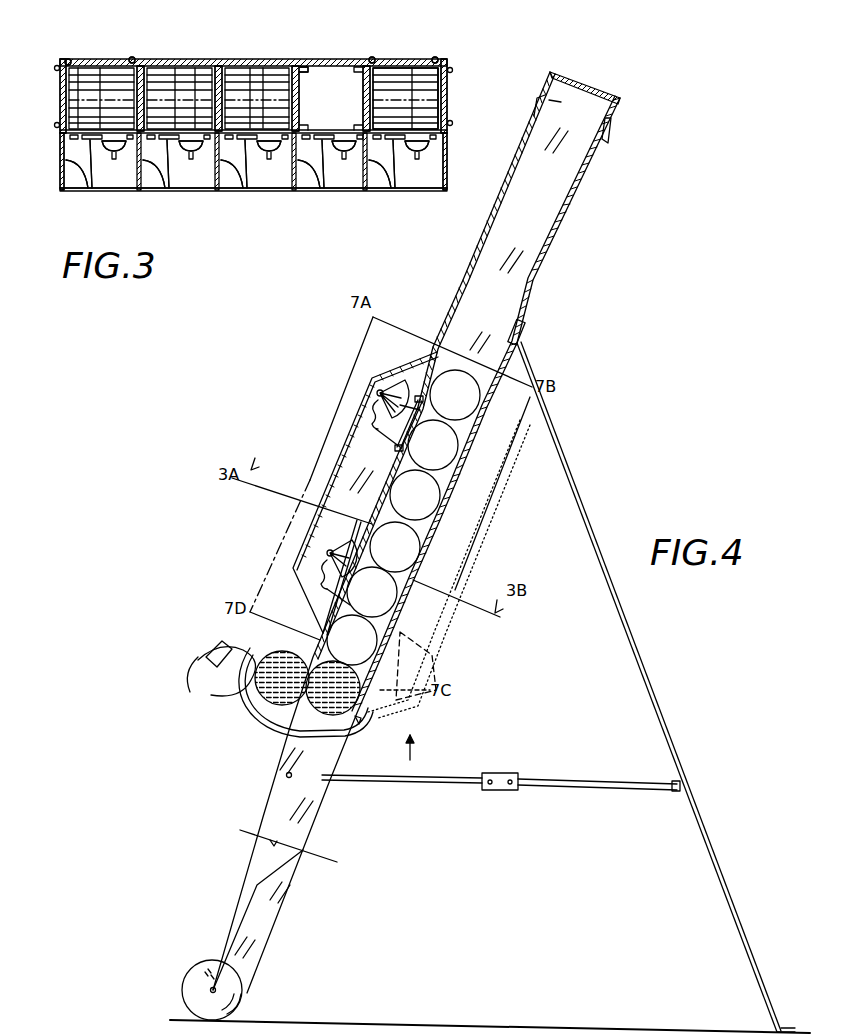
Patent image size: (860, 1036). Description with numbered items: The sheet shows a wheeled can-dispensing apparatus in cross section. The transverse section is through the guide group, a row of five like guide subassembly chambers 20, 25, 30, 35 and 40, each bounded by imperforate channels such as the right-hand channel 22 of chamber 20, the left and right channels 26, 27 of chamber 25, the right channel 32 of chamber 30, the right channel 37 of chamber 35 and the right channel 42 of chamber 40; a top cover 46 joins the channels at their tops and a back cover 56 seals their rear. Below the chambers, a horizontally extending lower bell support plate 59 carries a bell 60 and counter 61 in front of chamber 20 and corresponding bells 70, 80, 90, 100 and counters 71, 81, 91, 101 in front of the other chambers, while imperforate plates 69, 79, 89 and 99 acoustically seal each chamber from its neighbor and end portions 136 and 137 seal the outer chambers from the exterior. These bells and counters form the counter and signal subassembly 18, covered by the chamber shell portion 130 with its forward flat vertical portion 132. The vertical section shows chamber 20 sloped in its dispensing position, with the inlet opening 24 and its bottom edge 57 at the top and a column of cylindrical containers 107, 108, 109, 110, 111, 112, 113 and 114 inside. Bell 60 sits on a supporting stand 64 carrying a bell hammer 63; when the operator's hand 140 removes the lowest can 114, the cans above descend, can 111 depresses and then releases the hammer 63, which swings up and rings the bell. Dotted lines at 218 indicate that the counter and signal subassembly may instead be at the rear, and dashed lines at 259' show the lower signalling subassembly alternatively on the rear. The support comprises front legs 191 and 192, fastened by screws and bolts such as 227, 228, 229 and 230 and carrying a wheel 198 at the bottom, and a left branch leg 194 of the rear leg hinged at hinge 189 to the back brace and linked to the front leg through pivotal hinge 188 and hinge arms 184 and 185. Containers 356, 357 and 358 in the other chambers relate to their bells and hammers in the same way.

In FIG. 3, the guide subassembly chamber 20 is at (398, 90).
In FIG. 4, the guide subassembly chamber 20 is at (535, 212).
In FIG. 3, the imperforate right-hand channel 22 is at (445, 110).
In FIG. 4, the inlet opening 24 is at (549, 100).
In FIG. 3, the guide subassembly chamber 25 is at (338, 116).
In FIG. 3, the imperforate left channel 26 is at (300, 85).
In FIG. 3, the imperforate right channel 27 is at (364, 92).
In FIG. 3, the guide subassembly chamber 30 is at (260, 88).
In FIG. 3, the imperforate right channel 32 is at (300, 70).
In FIG. 3, the guide subassembly chamber 35 is at (175, 85).
In FIG. 3, the imperforate right channel 37 is at (214, 98).
In FIG. 3, the guide subassembly chamber 40 is at (95, 80).
In FIG. 3, the imperforate right channel 42 is at (138, 102).
In FIG. 4, the top cover 46 is at (619, 100).
In FIG. 4, the back cover 56 is at (604, 144).
In FIG. 4, the bottom edge of inlet opening 57 is at (540, 102).
In FIG. 3, the lower bell support plate 59 is at (70, 147).
In FIG. 3, the bell 60 is at (420, 156).
In FIG. 3, the counter 61 is at (396, 150).
In FIG. 4, the bell hammer 63 is at (330, 588).
In FIG. 4, the supporting stand 64 is at (398, 450).
In FIG. 3, the imperforate plate 69 is at (388, 186).
In FIG. 3, the bell 70 is at (346, 156).
In FIG. 3, the counter 71 is at (324, 150).
In FIG. 3, the imperforate plate 79 is at (316, 186).
In FIG. 3, the bell 80 is at (270, 156).
In FIG. 3, the counter 81 is at (247, 150).
In FIG. 3, the imperforate plate 89 is at (238, 186).
In FIG. 3, the bell 90 is at (192, 156).
In FIG. 3, the counter 91 is at (168, 150).
In FIG. 3, the imperforate plate 99 is at (157, 185).
In FIG. 3, the bell 100 is at (116, 155).
In FIG. 3, the counter 101 is at (90, 150).
In FIG. 4, the cylindrical container 107 is at (470, 404).
In FIG. 4, the cylindrical container 108 is at (448, 454).
In FIG. 4, the cylindrical container 109 is at (430, 504).
In FIG. 4, the cylindrical container 110 is at (409, 556).
In FIG. 3, the cylindrical container 111 is at (414, 88).
In FIG. 4, the cylindrical container 111 is at (385, 601).
In FIG. 4, the cylindrical container 112 is at (366, 649).
In FIG. 4, the cylindrical container 113 is at (358, 718).
In FIG. 4, the cylindrical container 114 is at (270, 700).
In FIG. 3, the counter and signal subassembly chamber shell portion 130 is at (64, 189).
In FIG. 4, the counter and signal subassembly chamber shell portion 130 is at (364, 399).
In FIG. 4, the forward flat vertical portion 132 is at (374, 413).
In FIG. 3, the left end portion 136 is at (60, 165).
In FIG. 3, the right end portion 137 is at (447, 175).
In FIG. 4, the hand 140 is at (210, 690).
In FIG. 4, the hinge arm 184 is at (398, 784).
In FIG. 4, the hinge arm 185 is at (612, 790).
In FIG. 4, the pivotal hinge 188 is at (500, 790).
In FIG. 4, the hinge 189 is at (521, 332).
In FIG. 3, the front leg 191 is at (64, 78).
In FIG. 4, the front leg 191 is at (220, 916).
In FIG. 3, the front leg 192 is at (447, 93).
In FIG. 4, the front leg 192 is at (268, 828).
In FIG. 4, the left branch leg 194 is at (672, 732).
In FIG. 4, the wheel 198 is at (200, 992).
In FIG. 4, the alternative rear position of counter and signal subassembly 218 is at (470, 534).
In FIG. 3, the screw or bolt 227 is at (66, 60).
In FIG. 3, the screw or bolt 228 is at (132, 57).
In FIG. 3, the screw or bolt 229 is at (372, 57).
In FIG. 3, the screw or bolt 230 is at (436, 57).
In FIG. 4, the alternative rear position of lower signalling subassembly 259' is at (443, 666).
In FIG. 3, the container 356 is at (250, 90).
In FIG. 3, the container 357 is at (196, 78).
In FIG. 3, the container 358 is at (84, 85).
In FIG. 4, the counter and signal subassembly 18 is at (408, 759).